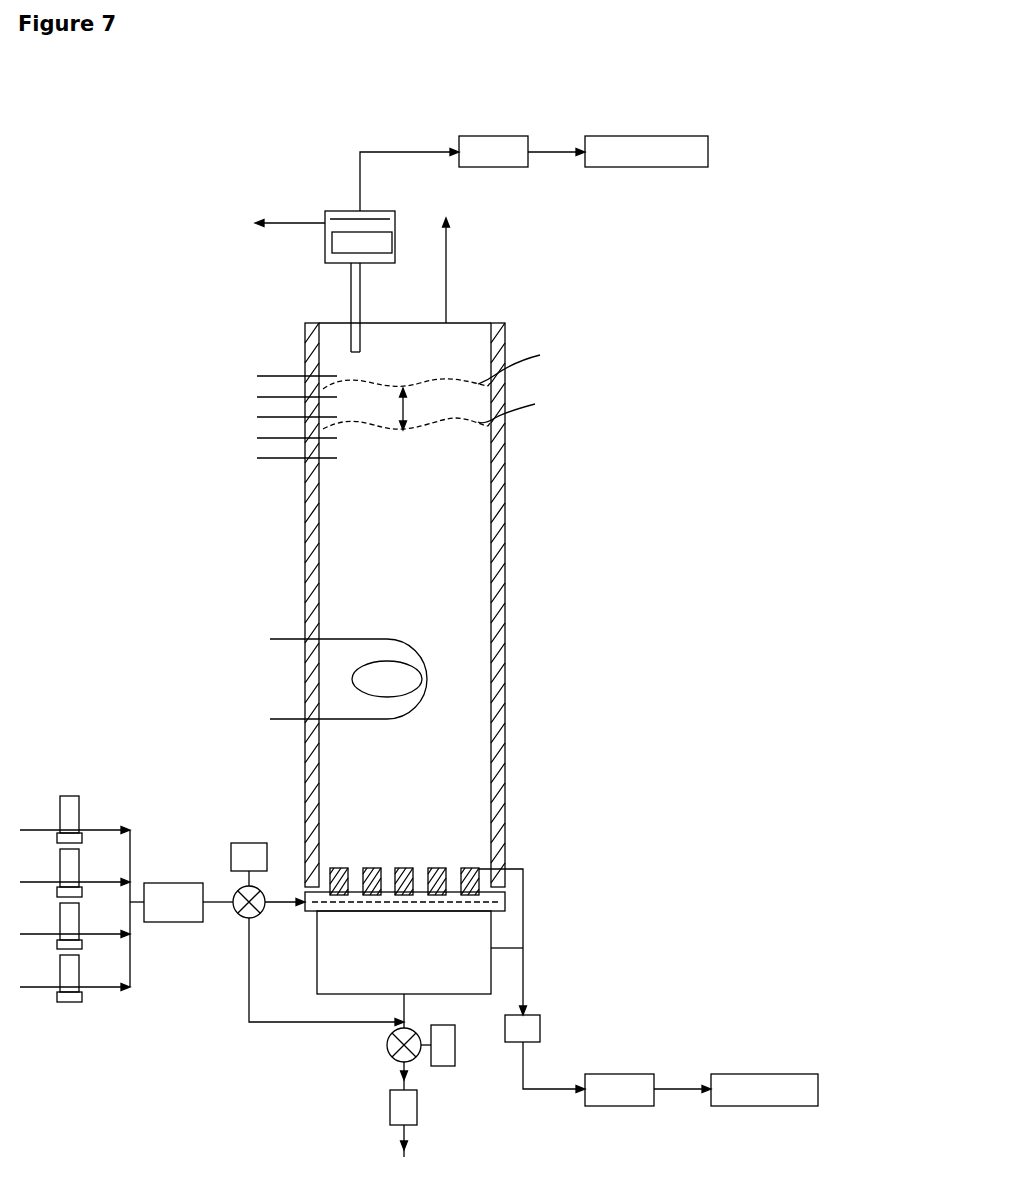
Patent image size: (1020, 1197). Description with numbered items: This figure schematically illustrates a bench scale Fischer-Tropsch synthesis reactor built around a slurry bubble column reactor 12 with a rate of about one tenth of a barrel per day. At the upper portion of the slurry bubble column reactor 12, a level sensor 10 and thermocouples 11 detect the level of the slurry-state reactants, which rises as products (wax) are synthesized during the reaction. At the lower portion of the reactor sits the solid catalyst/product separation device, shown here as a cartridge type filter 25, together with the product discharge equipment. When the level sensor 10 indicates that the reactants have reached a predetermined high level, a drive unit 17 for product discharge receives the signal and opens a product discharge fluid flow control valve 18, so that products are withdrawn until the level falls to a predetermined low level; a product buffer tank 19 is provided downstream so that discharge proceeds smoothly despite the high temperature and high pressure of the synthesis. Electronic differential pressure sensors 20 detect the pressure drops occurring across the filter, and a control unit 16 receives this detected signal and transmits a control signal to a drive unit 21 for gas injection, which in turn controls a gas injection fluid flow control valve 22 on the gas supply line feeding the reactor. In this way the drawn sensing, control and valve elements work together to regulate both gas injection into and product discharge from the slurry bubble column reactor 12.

The level sensor 10 is at (340, 211).
The thermocouples 11 is at (270, 375).
The slurry bubble column reactor 12 is at (508, 517).
The control unit 16 is at (490, 136).
The drive unit for product discharge 17 is at (443, 1067).
The product discharge fluid flow control valve 18 is at (387, 1048).
The product buffer tank 19 is at (388, 1107).
The electronic differential pressure sensors 20 is at (537, 1015).
The drive unit for gas injection 21 is at (628, 136).
The gas injection fluid flow control valve 22 is at (236, 912).
The cartridge type filter 25 is at (440, 868).